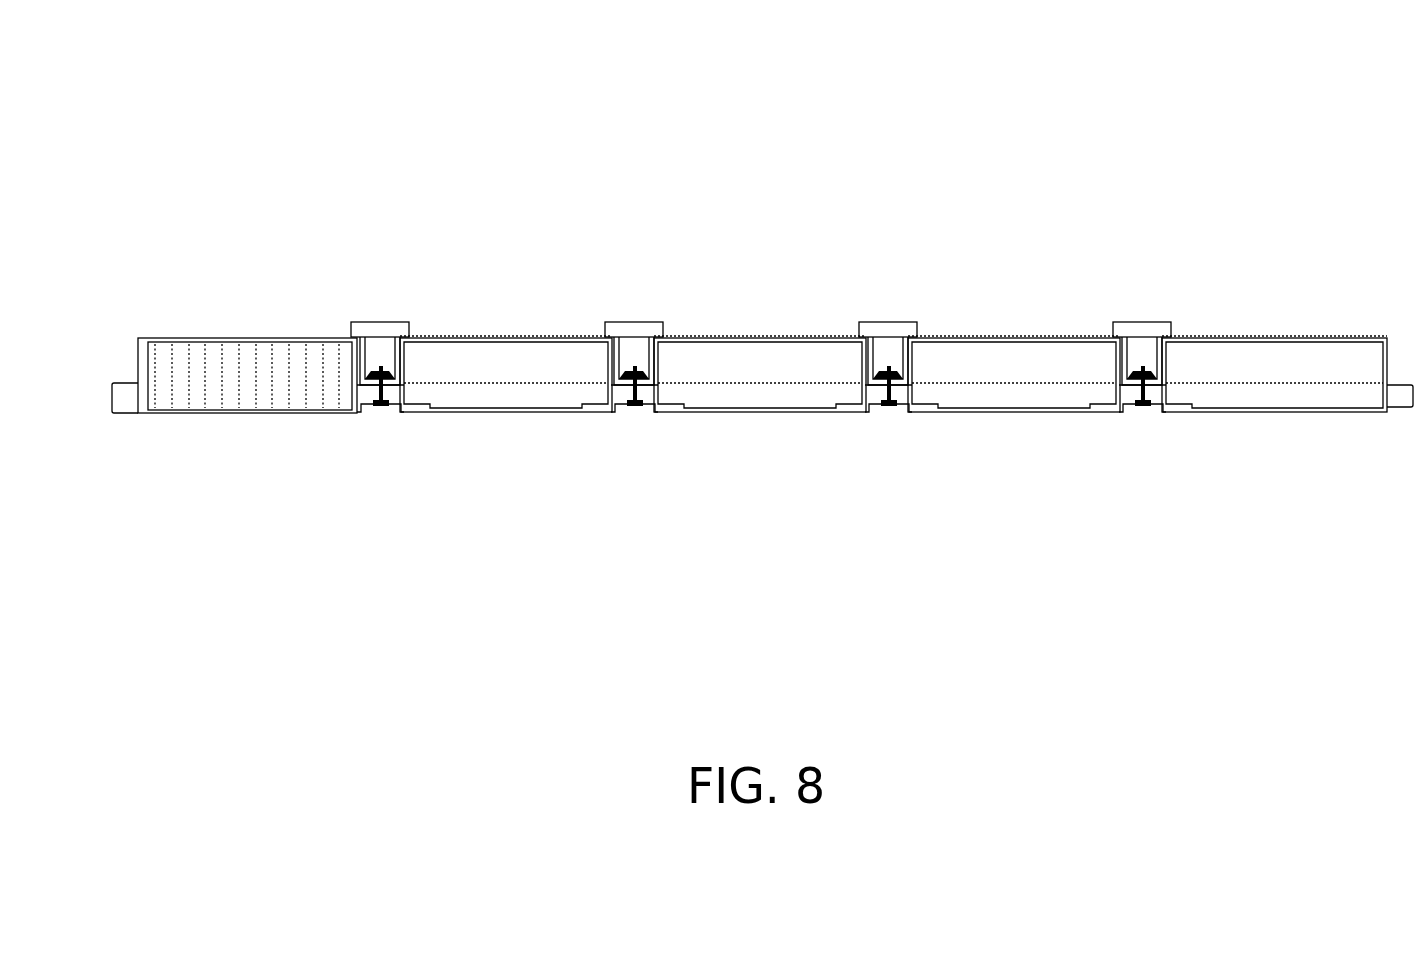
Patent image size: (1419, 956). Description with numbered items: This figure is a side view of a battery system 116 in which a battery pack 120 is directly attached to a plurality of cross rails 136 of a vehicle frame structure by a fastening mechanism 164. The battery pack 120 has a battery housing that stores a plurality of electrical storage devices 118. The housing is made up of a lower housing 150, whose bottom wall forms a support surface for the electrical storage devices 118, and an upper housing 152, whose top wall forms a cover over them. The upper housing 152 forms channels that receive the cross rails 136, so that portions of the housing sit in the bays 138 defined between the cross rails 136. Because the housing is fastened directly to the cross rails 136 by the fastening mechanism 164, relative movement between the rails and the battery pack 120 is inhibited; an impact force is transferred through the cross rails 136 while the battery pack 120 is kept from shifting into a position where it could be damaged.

The battery system 116 is at (357, 220).
The electrical storage devices 118 is at (180, 357).
The battery pack 120 is at (218, 412).
The cross rails 136 is at (390, 330).
The bays 138 is at (555, 350).
The lower housing 150 is at (130, 394).
The upper housing 152 is at (130, 338).
The fastening mechanism 164 is at (625, 428).